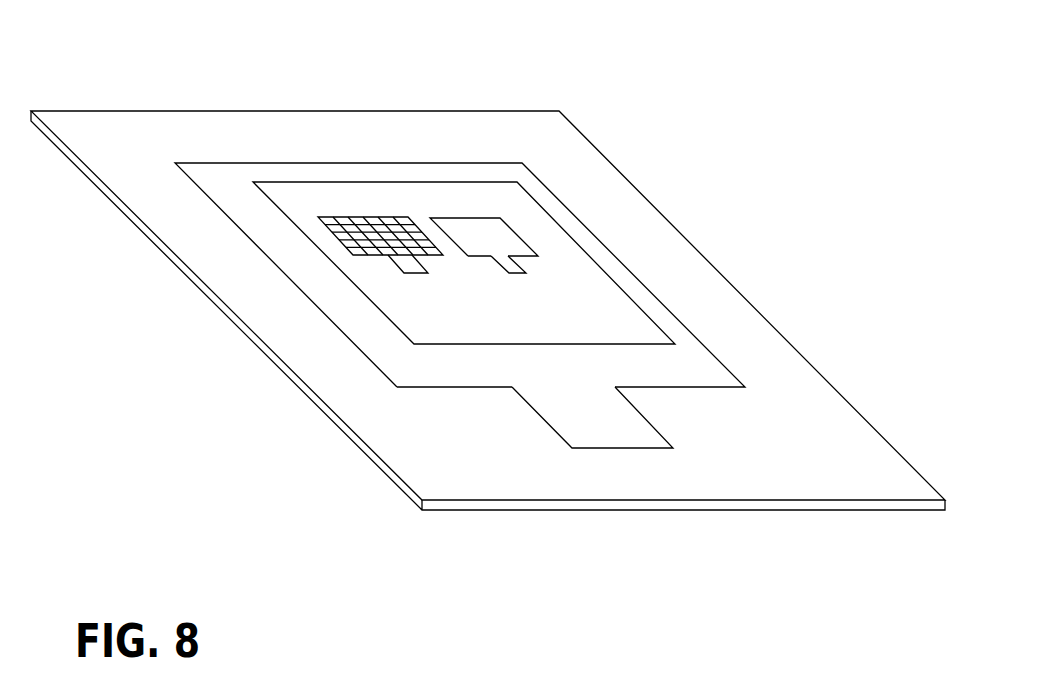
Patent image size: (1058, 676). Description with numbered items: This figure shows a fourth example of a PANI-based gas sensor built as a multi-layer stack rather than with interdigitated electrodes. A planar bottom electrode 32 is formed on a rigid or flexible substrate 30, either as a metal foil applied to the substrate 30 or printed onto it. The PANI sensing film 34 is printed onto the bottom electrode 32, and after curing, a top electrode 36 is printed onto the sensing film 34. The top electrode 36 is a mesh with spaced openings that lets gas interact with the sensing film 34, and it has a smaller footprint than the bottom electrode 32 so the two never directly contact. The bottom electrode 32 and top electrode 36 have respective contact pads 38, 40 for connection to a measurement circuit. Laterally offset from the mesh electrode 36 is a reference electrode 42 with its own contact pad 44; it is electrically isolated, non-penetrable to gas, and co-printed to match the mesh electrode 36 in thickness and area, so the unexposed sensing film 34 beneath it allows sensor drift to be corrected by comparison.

The substrate 30 is at (770, 477).
The bottom electrode 32 is at (220, 183).
The PANI sensing film 34 is at (573, 302).
The top electrode 36 is at (320, 217).
The contact pad 38 is at (620, 425).
The contact pad 40 is at (408, 265).
The reference electrode 42 is at (500, 234).
The contact pad 44 is at (510, 266).